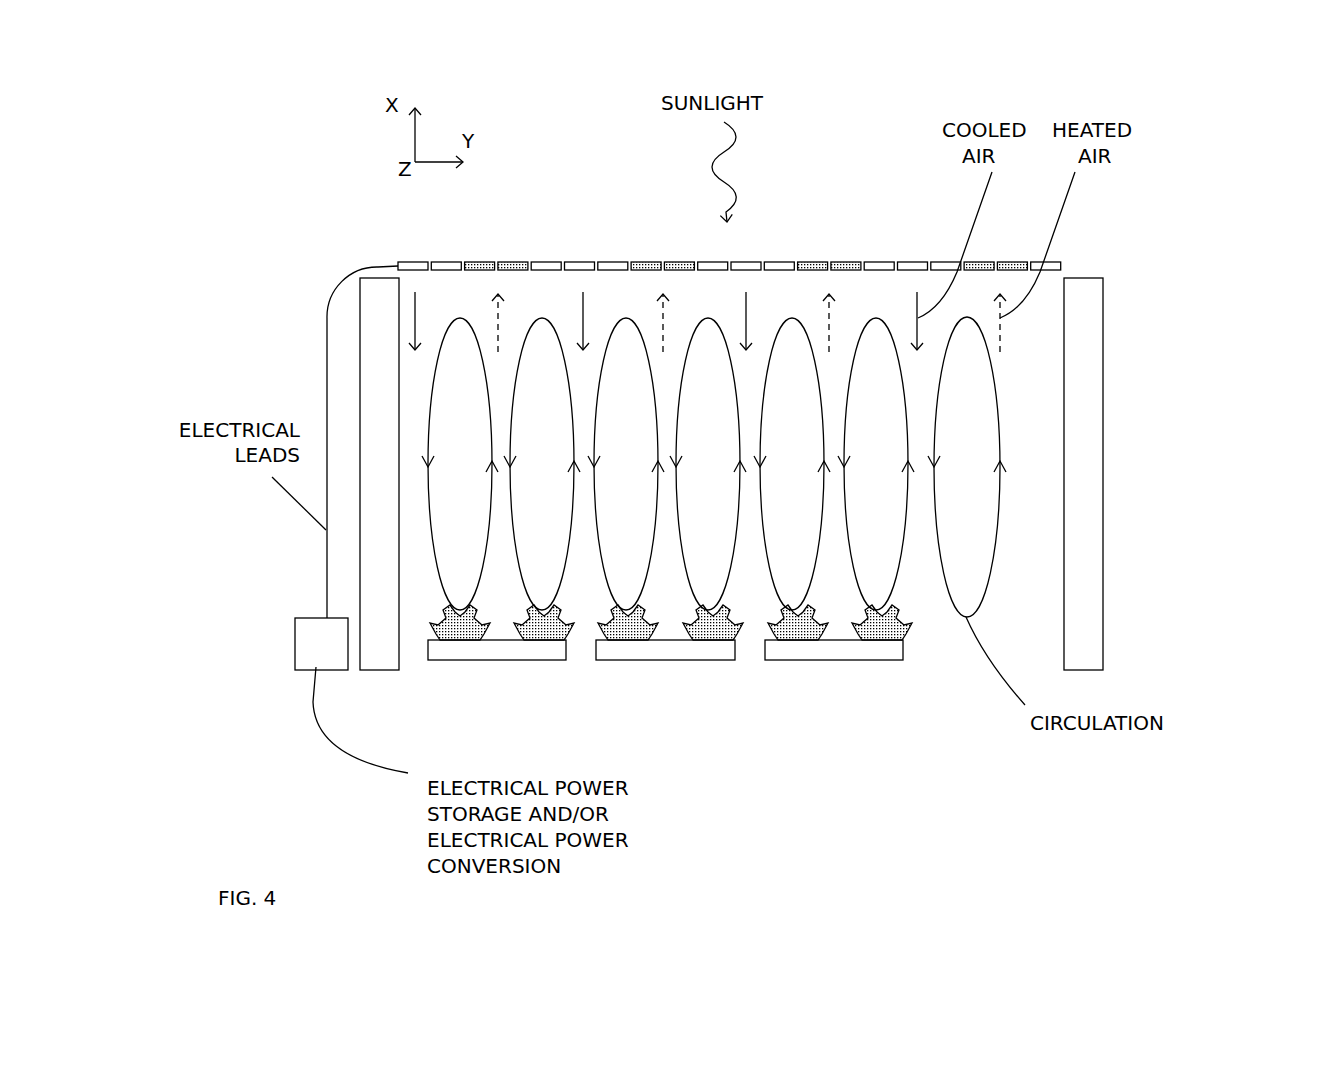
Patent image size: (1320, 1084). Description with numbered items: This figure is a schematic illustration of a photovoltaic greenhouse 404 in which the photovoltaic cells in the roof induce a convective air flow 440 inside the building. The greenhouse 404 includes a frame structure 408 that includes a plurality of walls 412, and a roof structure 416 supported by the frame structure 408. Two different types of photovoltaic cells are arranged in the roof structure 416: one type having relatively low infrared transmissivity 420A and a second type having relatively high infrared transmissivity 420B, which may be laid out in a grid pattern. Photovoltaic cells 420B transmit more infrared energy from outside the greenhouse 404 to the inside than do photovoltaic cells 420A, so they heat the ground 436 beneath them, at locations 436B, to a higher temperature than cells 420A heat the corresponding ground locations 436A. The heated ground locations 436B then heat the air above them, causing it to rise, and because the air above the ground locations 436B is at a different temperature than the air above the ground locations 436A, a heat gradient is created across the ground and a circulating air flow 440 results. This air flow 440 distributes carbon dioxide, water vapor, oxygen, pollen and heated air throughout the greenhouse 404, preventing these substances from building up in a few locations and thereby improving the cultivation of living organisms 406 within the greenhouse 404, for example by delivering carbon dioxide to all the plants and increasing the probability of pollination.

The photovoltaic greenhouse 404 is at (799, 770).
The living organisms 406 is at (921, 646).
The frame structure 408 is at (795, 474).
The walls 412 is at (1105, 473).
The roof structure 416 is at (749, 227).
The photovoltaic cells having relatively low infrared transmissivity 420A is at (412, 262).
The photovoltaic cells having relatively high infrared transmissivity 420B is at (497, 264).
The ground 436 is at (789, 674).
The ground locations beneath low-transmissivity cells 436A is at (413, 640).
The heated ground locations beneath high-transmissivity cells 436B is at (490, 628).
The convective air flow 440 is at (714, 467).